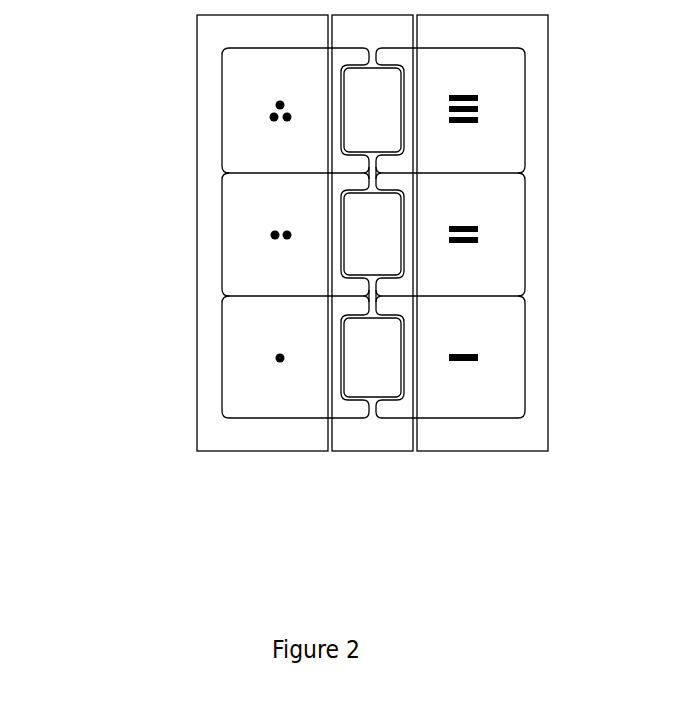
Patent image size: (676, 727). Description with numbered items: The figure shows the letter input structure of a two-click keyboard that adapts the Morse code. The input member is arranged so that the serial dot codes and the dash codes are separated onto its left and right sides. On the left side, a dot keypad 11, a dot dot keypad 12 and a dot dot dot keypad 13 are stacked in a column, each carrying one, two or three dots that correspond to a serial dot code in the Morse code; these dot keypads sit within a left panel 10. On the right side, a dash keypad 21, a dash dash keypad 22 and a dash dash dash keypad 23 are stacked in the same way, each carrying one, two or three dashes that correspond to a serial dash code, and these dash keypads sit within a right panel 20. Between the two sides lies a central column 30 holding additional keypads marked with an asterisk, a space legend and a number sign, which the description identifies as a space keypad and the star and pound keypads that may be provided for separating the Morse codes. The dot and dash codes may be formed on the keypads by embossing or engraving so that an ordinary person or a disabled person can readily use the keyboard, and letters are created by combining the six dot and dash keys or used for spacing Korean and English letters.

The first key panel 10 is at (197, 53).
The dot keypad 11 is at (253, 362).
The dot dot keypad 12 is at (253, 242).
The dot dot dot keypad 13 is at (253, 117).
The second key panel 20 is at (548, 52).
The dash keypad 21 is at (492, 364).
The dash dash keypad 22 is at (492, 242).
The dash dash dash keypad 23 is at (492, 117).
The middle function key column 30 is at (372, 451).